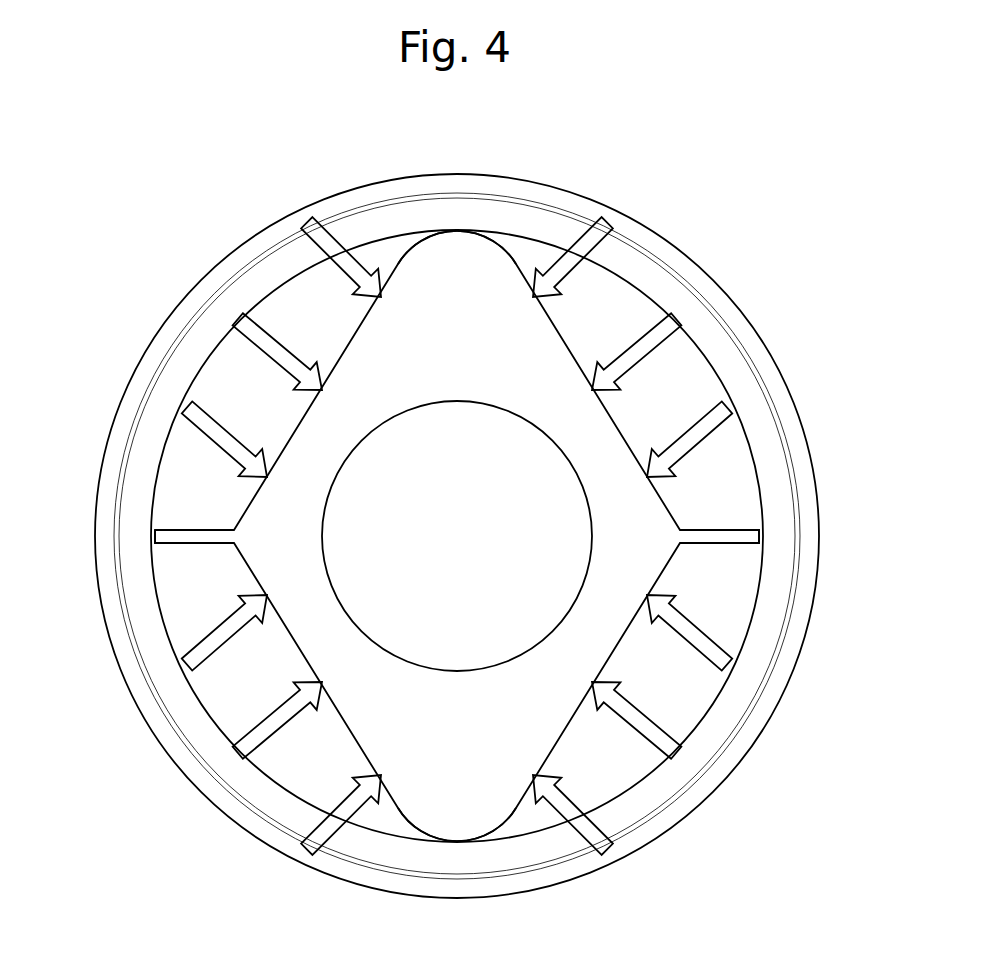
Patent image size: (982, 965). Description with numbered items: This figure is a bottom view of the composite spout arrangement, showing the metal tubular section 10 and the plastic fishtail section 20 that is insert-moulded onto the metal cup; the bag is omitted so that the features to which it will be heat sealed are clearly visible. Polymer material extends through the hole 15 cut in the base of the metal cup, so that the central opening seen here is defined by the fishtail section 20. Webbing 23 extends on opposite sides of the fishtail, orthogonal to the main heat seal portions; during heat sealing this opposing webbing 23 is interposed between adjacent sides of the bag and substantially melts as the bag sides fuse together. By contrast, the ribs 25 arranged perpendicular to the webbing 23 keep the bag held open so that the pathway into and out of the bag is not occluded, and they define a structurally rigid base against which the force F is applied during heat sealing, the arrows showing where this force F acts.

The tubular section 10 is at (168, 300).
The hole 15 is at (478, 545).
The fishtail section 20 is at (473, 731).
The webbing 23 is at (156, 533).
The ribs 25 is at (455, 236).
The force F is at (307, 225).